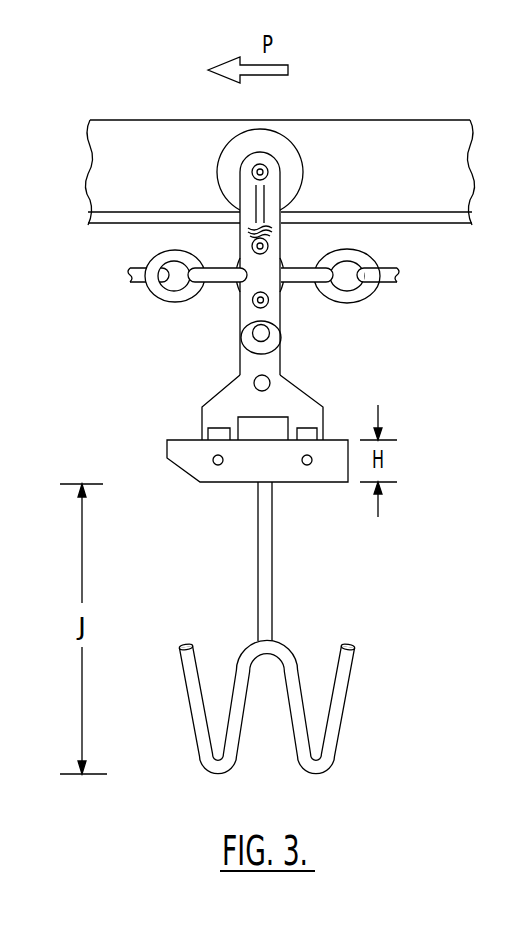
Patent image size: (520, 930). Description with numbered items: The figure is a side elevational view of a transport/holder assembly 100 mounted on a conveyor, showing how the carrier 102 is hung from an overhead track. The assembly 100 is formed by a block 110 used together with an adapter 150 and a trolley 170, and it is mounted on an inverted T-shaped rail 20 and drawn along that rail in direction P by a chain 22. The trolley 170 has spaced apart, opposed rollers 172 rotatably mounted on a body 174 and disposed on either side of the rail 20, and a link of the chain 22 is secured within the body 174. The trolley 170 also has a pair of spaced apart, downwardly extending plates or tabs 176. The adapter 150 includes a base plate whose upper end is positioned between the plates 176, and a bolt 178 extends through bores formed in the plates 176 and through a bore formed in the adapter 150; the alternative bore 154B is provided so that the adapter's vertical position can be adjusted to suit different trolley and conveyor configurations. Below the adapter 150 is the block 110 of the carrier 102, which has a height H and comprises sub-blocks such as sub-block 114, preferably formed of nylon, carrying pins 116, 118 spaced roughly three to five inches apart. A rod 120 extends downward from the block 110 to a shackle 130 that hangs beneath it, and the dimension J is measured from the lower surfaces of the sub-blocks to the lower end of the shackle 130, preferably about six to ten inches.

The rail 20 is at (428, 128).
The chain 22 is at (362, 292).
The transport/holder assembly 100 is at (300, 422).
The carrier 102 is at (315, 535).
The block 110 is at (243, 446).
The sub-block 114 is at (177, 453).
The pin 116 is at (213, 464).
The pin 118 is at (309, 465).
The rod 120 is at (273, 535).
The shackle 130 is at (374, 675).
The adapter 150 is at (294, 371).
The bore 154B is at (270, 383).
The trolley 170 is at (315, 229).
The roller 172 is at (268, 133).
The body 174 is at (272, 197).
The plate 176 is at (271, 333).
The bolt 178 is at (253, 333).